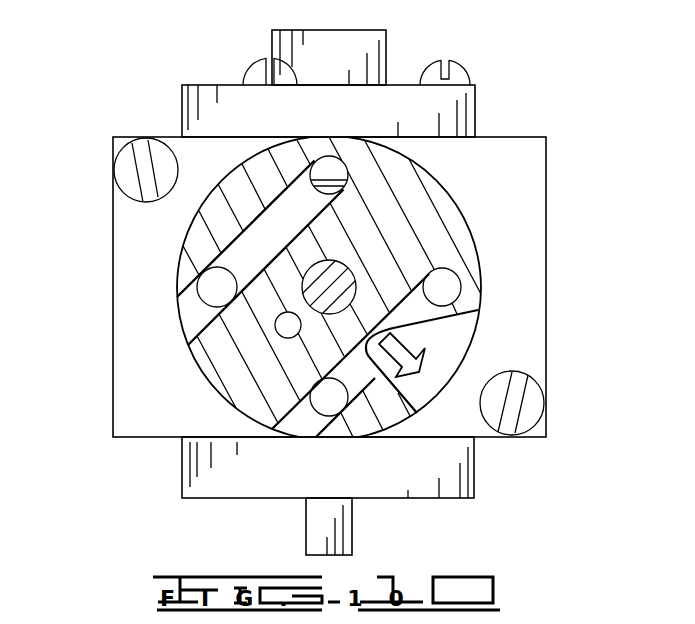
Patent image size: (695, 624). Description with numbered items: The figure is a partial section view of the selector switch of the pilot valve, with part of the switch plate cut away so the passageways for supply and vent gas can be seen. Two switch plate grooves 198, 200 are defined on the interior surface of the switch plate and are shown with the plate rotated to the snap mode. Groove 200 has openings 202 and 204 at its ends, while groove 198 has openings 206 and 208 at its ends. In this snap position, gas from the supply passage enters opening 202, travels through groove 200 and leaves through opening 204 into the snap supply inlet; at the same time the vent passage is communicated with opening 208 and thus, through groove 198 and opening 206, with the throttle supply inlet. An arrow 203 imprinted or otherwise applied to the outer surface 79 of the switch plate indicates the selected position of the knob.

The switch plate groove 198 is at (248, 245).
The opening 206 is at (318, 163).
The opening 208 is at (210, 292).
The opening 202 is at (448, 285).
The opening 204 is at (320, 402).
The switch plate groove 200 is at (360, 377).
The outer surface 79 is at (452, 336).
The arrow 203 is at (428, 378).